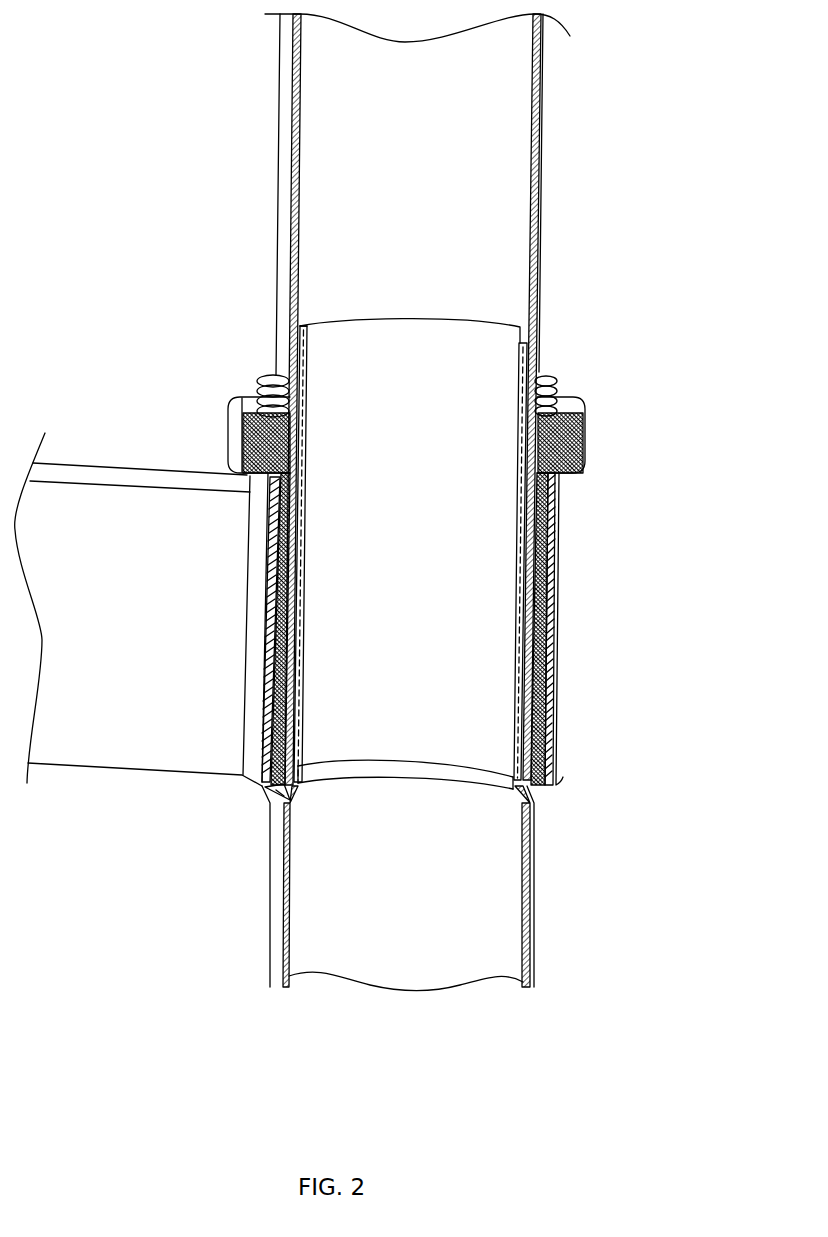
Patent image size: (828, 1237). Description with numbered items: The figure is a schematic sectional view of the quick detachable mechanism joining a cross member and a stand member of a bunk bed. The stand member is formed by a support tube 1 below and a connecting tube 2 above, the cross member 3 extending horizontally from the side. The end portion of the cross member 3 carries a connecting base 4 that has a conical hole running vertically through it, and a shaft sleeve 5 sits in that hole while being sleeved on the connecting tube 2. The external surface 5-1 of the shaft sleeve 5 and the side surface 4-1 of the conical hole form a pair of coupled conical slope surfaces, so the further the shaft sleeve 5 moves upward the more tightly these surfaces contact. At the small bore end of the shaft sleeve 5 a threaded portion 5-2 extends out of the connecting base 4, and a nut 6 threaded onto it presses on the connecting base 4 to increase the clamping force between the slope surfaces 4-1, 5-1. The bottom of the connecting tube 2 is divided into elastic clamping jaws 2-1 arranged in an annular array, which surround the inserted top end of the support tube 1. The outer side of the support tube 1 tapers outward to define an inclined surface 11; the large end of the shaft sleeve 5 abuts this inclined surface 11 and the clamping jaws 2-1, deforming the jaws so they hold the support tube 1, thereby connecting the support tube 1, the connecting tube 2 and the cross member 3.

The support tube 1 is at (497, 893).
The connecting tube 2 is at (500, 115).
The elastic clamping jaws 2-1 is at (558, 758).
The cross member 3 is at (130, 727).
The connecting base 4 is at (558, 540).
The side surface of the conical hole 4-1 is at (555, 578).
The shaft sleeve 5 is at (553, 680).
The external surface of the shaft sleeve 5-1 is at (553, 642).
The threaded portion 5-2 is at (258, 387).
The nut 6 is at (567, 400).
The inclined surface 11 is at (283, 797).